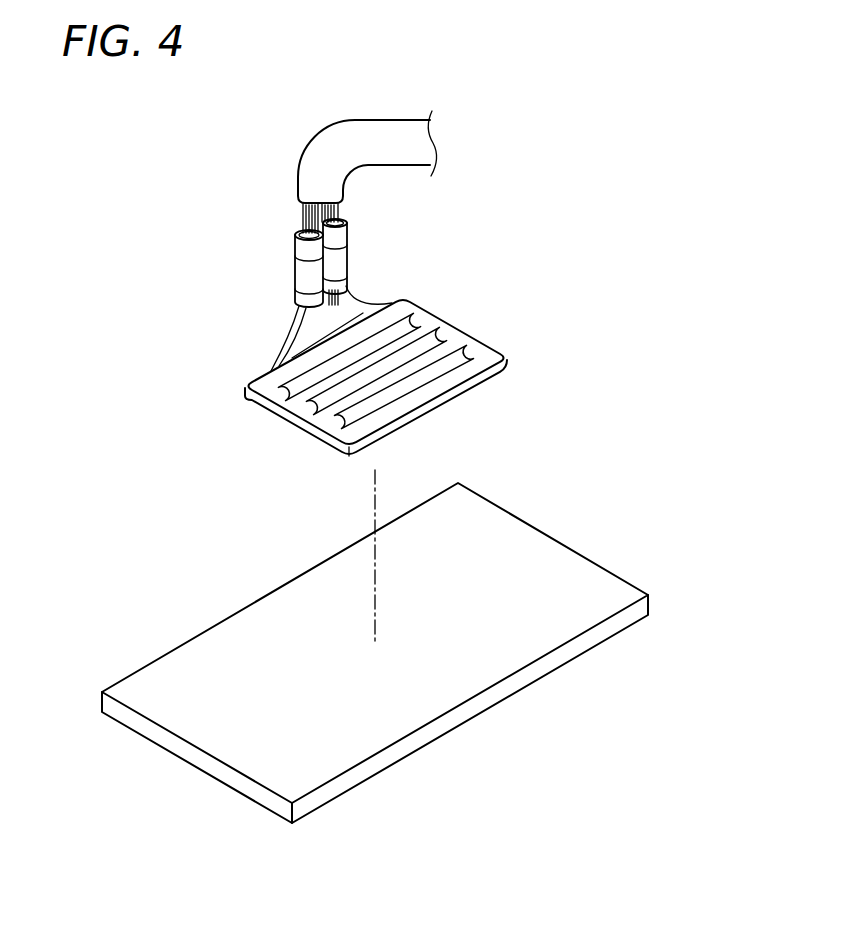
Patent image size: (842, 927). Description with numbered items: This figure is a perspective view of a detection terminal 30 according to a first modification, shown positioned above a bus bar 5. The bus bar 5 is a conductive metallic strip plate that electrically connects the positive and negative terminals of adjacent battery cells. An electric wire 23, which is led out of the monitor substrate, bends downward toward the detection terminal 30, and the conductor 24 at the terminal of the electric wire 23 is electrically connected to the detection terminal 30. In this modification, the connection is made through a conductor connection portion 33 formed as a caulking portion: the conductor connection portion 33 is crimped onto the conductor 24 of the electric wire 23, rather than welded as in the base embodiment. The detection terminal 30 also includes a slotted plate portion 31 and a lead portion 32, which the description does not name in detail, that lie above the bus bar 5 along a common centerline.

The bus bar 5 is at (533, 546).
The electric wire 23 is at (381, 117).
The conductor 24 is at (300, 212).
The detection terminal 30 is at (326, 311).
The heater plate 31 is at (485, 338).
The heating wire 32 is at (330, 335).
The conductor connection portion 33 is at (292, 263).